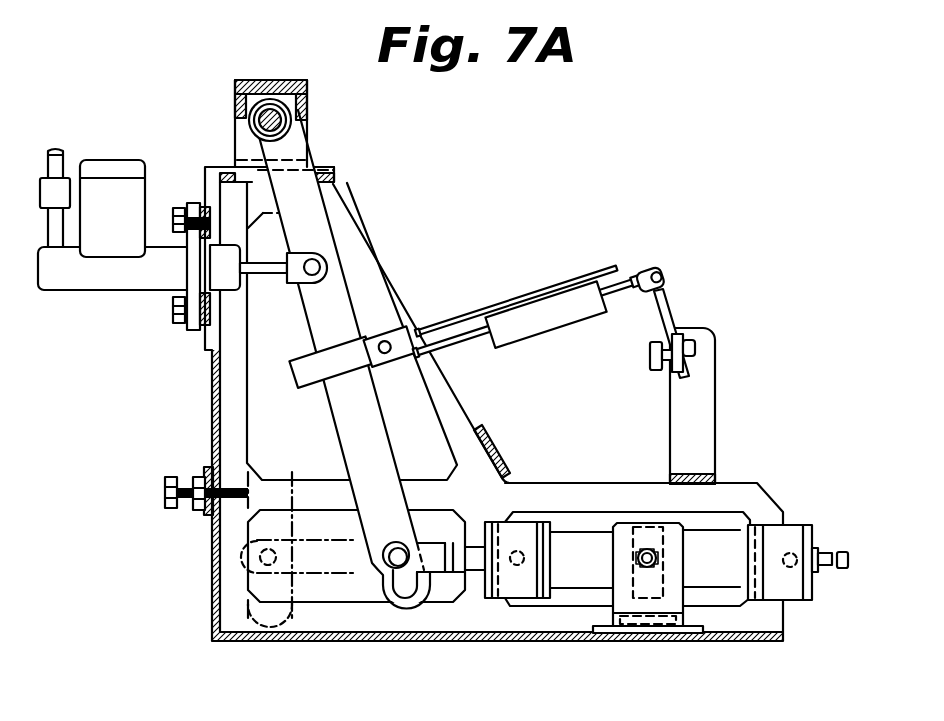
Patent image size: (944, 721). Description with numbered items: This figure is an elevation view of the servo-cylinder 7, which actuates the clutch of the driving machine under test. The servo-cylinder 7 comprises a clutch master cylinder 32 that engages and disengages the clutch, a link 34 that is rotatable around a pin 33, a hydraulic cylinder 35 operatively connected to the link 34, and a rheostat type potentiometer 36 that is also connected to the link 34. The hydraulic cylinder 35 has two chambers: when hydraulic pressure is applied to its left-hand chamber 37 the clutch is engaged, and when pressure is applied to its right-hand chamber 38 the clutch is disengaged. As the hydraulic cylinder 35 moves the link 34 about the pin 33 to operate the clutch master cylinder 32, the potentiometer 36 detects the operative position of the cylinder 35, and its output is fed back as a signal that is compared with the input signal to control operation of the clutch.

The servo-cylinder 7 is at (358, 650).
The clutch master cylinder 32 is at (122, 275).
The pin 33 is at (285, 124).
The link 34 is at (338, 313).
The hydraulic cylinder 35 is at (588, 535).
The rheostat type potentiometer 36 is at (527, 297).
The left-hand chamber 37 is at (515, 575).
The right-hand chamber 38 is at (790, 583).